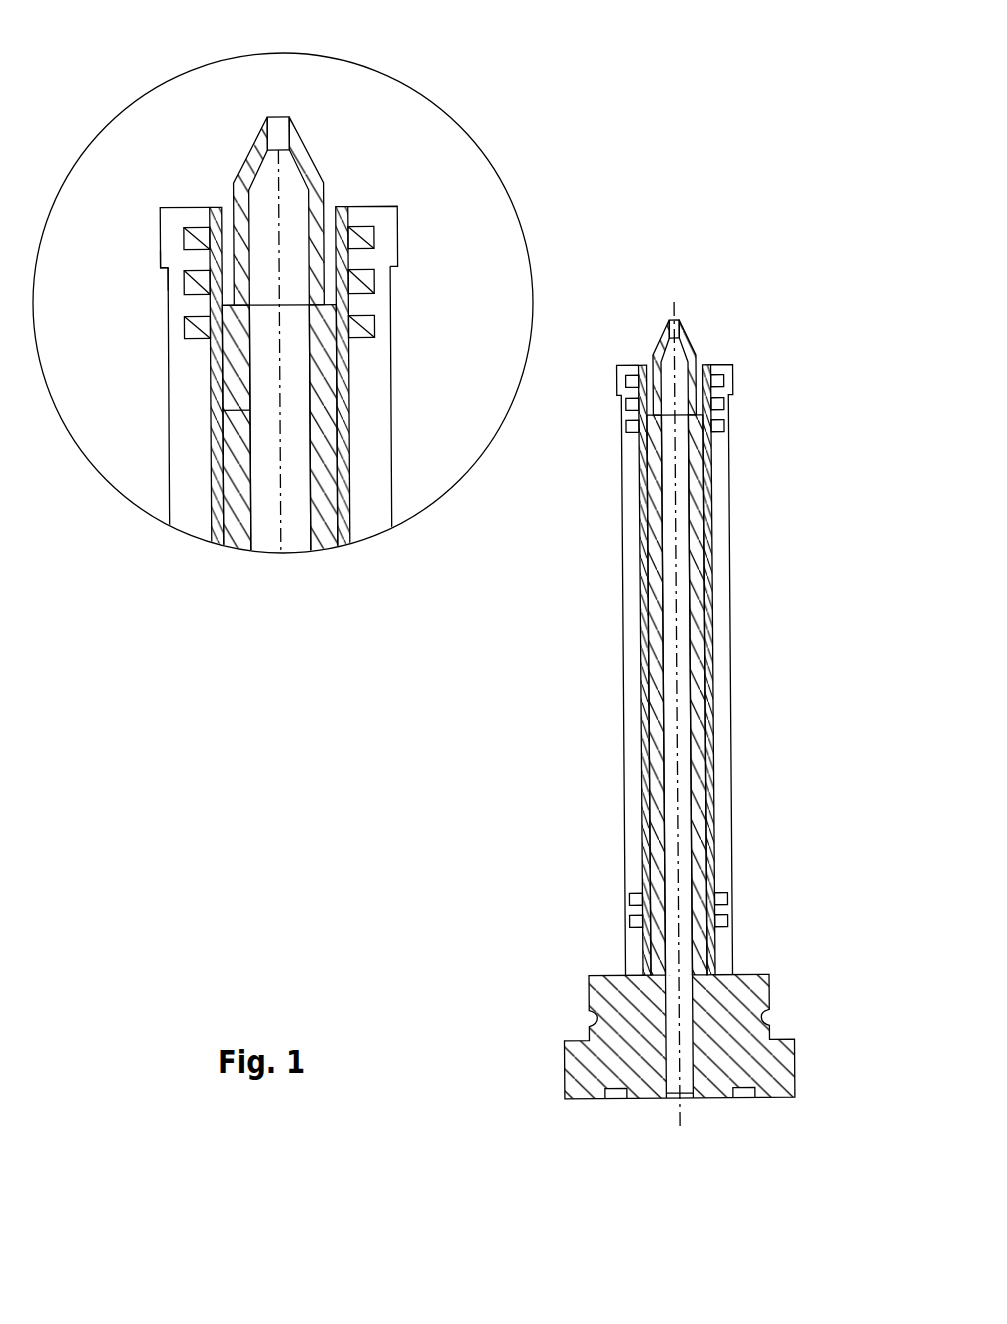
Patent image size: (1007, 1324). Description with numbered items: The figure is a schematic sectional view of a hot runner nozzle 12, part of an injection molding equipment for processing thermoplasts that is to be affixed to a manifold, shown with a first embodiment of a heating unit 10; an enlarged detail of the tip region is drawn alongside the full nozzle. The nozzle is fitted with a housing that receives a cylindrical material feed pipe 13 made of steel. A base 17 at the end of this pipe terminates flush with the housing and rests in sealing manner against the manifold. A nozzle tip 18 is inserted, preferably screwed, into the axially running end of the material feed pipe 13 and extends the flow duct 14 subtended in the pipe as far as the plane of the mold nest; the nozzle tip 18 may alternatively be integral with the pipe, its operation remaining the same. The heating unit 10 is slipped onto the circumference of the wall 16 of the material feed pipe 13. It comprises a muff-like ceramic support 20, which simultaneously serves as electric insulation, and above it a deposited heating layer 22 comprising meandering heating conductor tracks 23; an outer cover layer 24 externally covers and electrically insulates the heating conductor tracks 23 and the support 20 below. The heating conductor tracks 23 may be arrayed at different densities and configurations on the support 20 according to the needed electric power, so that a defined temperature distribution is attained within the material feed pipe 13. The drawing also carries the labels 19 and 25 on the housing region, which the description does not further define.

The heating unit 10 is at (567, 664).
The hot runner nozzle 12 is at (333, 183).
The material feed pipe 13 is at (235, 537).
The flow duct 14 is at (265, 538).
The wall 16 is at (223, 420).
The base 17 is at (583, 1068).
The nozzle tip 18 is at (258, 148).
The housing step 19 is at (160, 273).
The ceramic support 20 is at (217, 475).
The heating layer 22 is at (634, 651).
The heating conductor tracks 23 is at (375, 228).
The outer cover layer 24 is at (373, 393).
The housing front part 25 is at (160, 235).